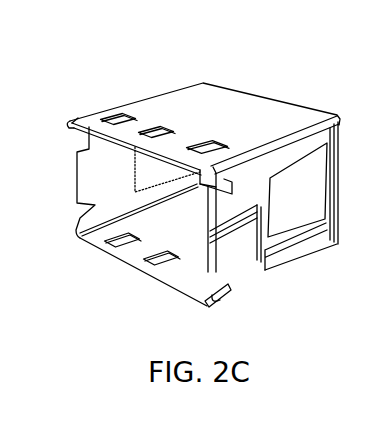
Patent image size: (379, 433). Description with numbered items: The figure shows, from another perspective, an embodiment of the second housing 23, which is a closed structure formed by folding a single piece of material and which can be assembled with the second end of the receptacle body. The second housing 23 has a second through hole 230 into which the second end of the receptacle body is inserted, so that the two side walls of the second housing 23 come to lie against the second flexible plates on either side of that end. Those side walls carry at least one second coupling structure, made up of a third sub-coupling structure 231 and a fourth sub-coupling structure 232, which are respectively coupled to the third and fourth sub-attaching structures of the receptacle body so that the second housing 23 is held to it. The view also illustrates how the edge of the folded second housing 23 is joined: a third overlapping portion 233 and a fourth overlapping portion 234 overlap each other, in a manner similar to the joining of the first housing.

The second housing 23 is at (112, 84).
The second through hole 230 is at (180, 230).
The third sub-coupling structure 231 is at (318, 155).
The fourth sub-coupling structure 232 is at (227, 297).
The third overlapping portion 233 is at (200, 254).
The fourth overlapping portion 234 is at (283, 247).